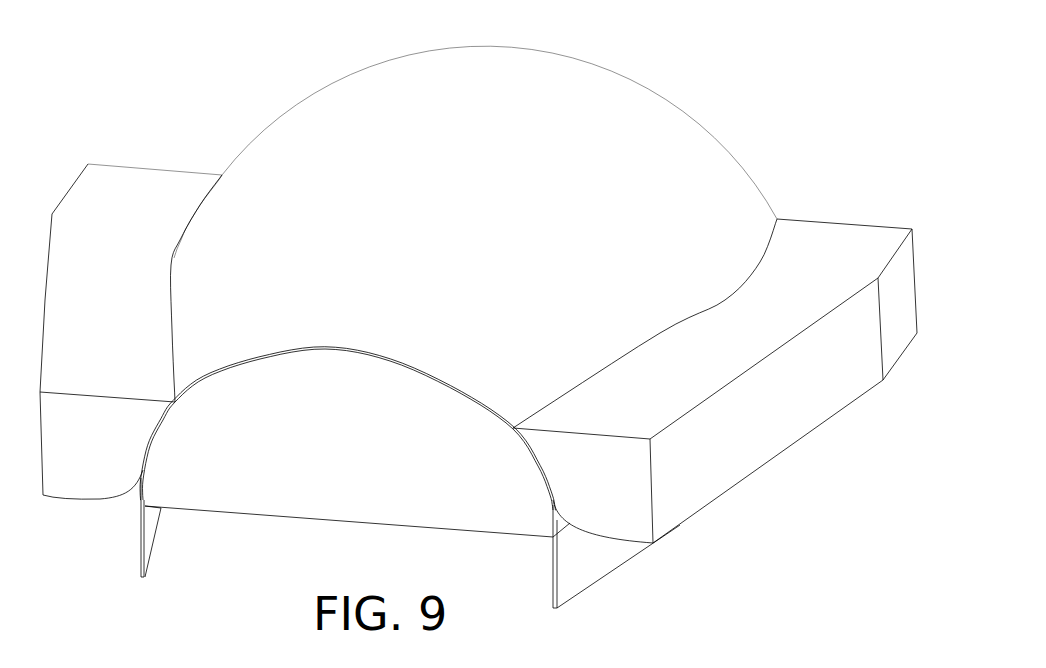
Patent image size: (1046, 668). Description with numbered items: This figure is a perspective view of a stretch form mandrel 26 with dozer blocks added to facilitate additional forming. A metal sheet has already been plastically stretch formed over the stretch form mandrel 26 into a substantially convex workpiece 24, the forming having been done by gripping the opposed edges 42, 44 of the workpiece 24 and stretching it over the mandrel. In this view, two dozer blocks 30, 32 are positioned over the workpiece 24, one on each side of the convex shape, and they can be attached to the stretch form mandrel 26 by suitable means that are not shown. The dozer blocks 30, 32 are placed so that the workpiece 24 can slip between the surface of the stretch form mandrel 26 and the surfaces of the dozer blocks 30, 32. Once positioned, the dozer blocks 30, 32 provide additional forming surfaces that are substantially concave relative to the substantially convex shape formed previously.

The workpiece 24 is at (598, 122).
The stretch form mandrel 26 is at (282, 478).
The dozer block 30 is at (120, 265).
The dozer block 32 is at (822, 245).
The edge 42 is at (154, 552).
The edge 44 is at (622, 563).